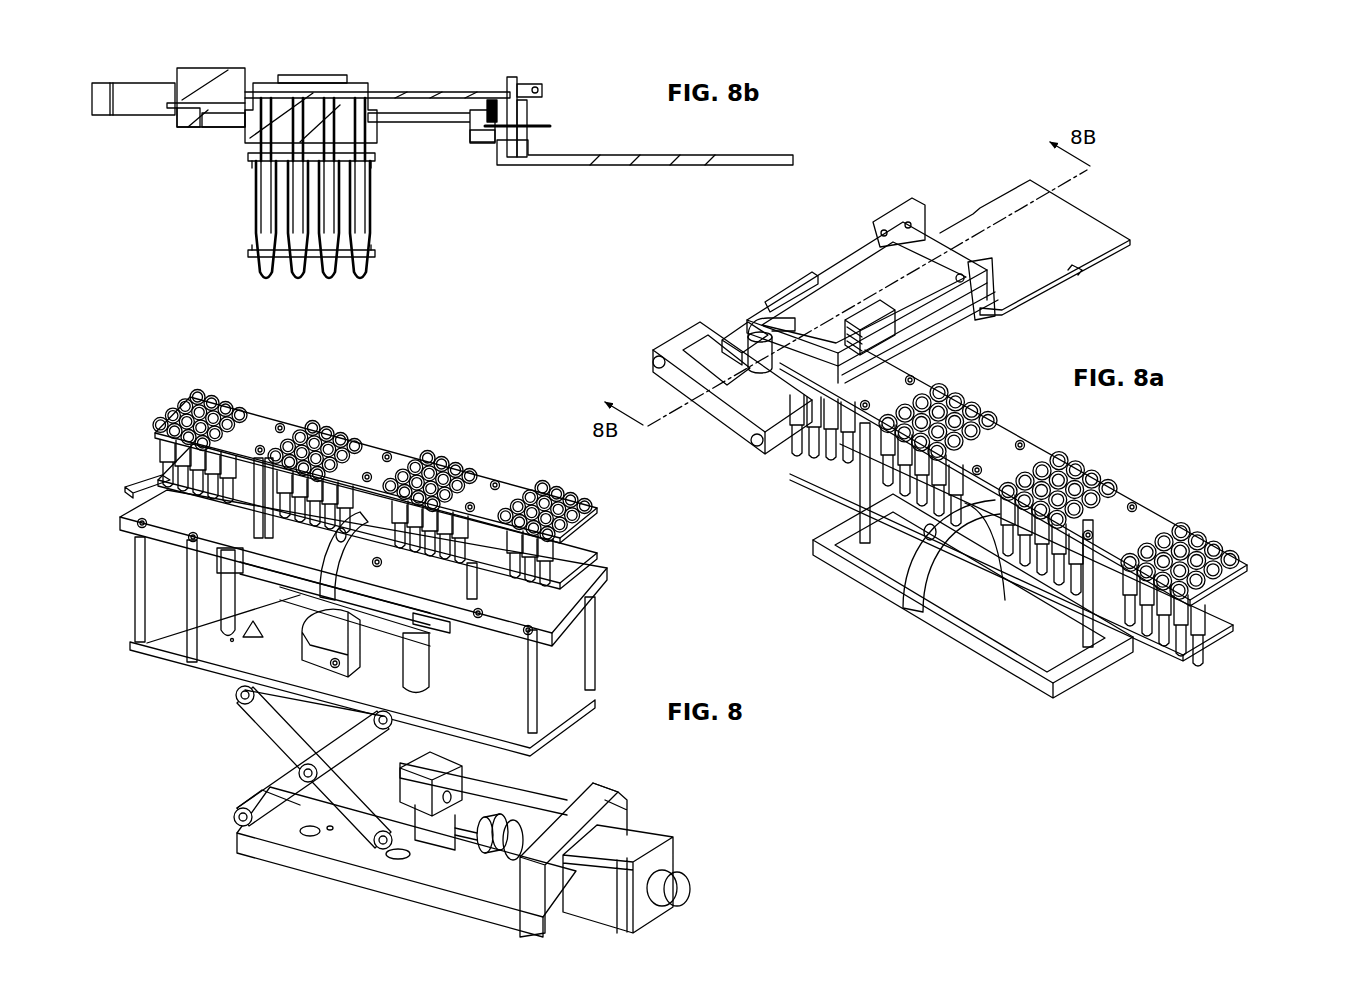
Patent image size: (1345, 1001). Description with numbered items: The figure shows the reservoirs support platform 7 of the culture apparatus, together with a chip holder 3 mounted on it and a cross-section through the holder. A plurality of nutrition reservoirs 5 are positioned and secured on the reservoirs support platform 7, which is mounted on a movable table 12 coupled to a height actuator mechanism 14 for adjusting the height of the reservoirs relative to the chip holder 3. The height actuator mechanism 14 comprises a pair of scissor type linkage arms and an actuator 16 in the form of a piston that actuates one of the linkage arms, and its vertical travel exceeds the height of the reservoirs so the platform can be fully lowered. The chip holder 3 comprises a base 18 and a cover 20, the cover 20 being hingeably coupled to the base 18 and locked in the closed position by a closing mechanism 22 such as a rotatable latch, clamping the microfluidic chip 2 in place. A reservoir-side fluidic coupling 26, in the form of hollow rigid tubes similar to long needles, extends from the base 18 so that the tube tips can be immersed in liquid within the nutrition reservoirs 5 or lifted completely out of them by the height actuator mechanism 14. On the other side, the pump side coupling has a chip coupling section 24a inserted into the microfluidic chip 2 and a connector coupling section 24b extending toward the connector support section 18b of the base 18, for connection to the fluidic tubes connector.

In FIG. 8b, the microfluidic chip 2 is at (388, 97).
In FIG. 8a, the chip holder 3 is at (775, 268).
In FIG. 8b, the nutrition reservoirs 5 is at (375, 197).
In FIG. 8a, the nutrition reservoirs 5 is at (1027, 557).
In FIG. 8a, the reservoirs support platform 7 is at (822, 487).
In FIG. 8, the reservoirs support platform 7 is at (603, 532).
In FIG. 8, the movable table 12 is at (607, 658).
In FIG. 8, the height actuator mechanism 14 is at (512, 775).
In FIG. 8, the actuator 16 is at (483, 850).
In FIG. 8b, the base 18 is at (187, 115).
In FIG. 8b, the connector support section 18b is at (610, 156).
In FIG. 8b, the cover 20 is at (252, 92).
In FIG. 8a, the closing mechanism 22 is at (762, 332).
In FIG. 8b, the chip coupling section 24a is at (488, 115).
In FIG. 8b, the connector coupling section 24b is at (540, 122).
In FIG. 8b, the reservoir-side fluidic coupling 26 is at (362, 182).